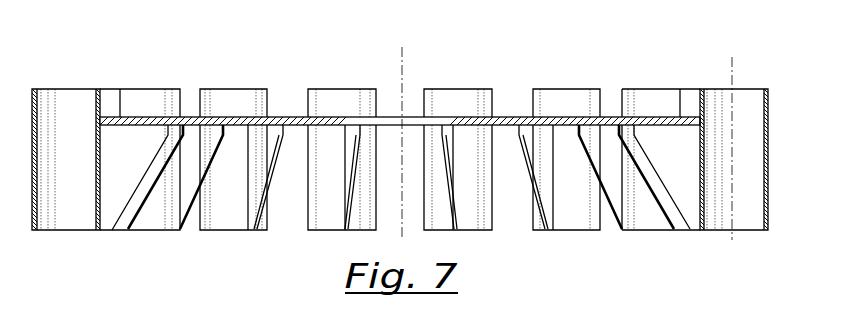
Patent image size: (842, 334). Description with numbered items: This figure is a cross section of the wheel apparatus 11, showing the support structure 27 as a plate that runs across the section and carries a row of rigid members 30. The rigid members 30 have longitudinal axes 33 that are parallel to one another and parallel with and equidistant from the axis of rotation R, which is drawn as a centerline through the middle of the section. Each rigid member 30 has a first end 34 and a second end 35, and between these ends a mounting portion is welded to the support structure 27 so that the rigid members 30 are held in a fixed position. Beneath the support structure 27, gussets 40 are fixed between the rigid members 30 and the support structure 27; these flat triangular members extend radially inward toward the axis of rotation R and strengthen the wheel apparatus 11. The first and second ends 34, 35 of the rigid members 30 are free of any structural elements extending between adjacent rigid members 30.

The wheel apparatus 11 is at (632, 295).
The support structure 27 is at (608, 117).
The rigid members 30 is at (543, 89).
The longitudinal axes 33 is at (733, 70).
The first end 34 is at (230, 89).
The second end 35 is at (233, 230).
The gussets 40 is at (120, 168).
The axis of rotation R is at (398, 67).